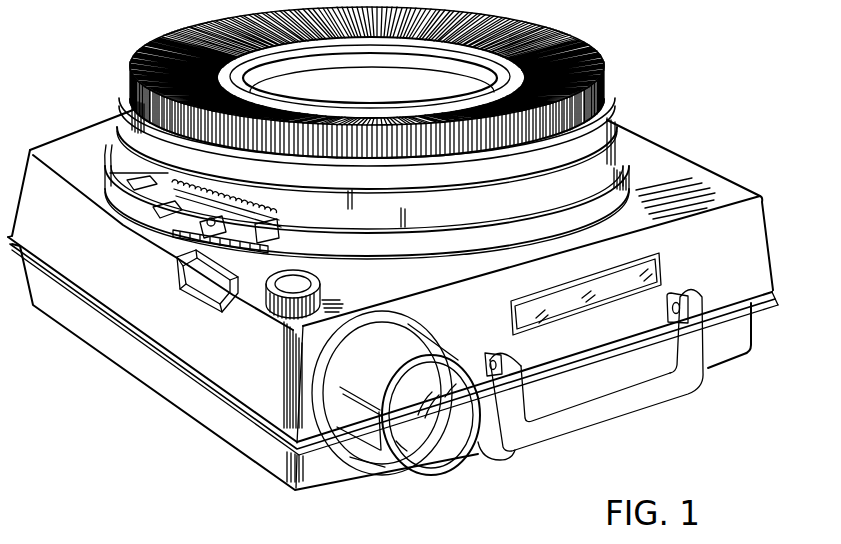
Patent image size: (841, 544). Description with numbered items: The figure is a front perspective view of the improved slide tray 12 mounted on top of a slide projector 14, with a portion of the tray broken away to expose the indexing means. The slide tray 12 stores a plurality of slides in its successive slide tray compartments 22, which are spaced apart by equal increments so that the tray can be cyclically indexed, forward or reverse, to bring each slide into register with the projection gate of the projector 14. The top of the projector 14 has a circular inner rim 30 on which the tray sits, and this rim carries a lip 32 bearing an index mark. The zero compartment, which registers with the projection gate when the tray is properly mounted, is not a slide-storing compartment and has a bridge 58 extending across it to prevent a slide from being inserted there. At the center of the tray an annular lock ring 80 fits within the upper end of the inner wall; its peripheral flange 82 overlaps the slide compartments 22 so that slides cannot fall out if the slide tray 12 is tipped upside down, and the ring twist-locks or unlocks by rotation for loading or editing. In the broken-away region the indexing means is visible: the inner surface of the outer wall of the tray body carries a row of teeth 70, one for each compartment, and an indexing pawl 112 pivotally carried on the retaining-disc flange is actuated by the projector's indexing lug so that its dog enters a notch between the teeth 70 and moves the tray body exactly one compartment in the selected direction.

The slide tray 12 is at (620, 88).
The slide projector 14 is at (100, 350).
The slide tray compartments 22 is at (598, 57).
The circular inner rim 30 is at (100, 153).
The lip 32 is at (112, 210).
The bridge 58 is at (133, 112).
The teeth 70 is at (267, 206).
The annular lock ring 80 is at (387, 54).
The peripheral flange 82 is at (253, 93).
The indexing pawl 112 is at (222, 240).